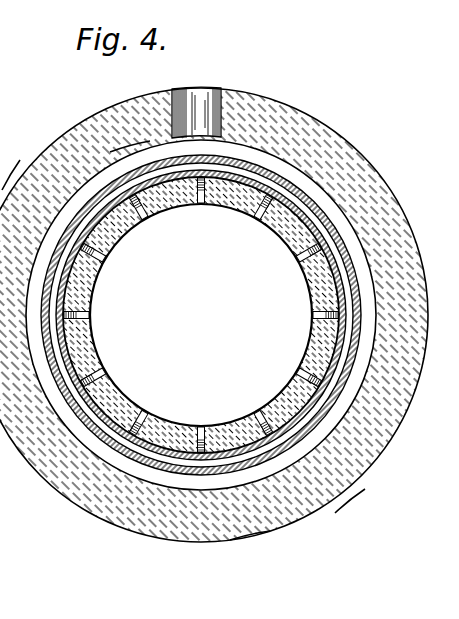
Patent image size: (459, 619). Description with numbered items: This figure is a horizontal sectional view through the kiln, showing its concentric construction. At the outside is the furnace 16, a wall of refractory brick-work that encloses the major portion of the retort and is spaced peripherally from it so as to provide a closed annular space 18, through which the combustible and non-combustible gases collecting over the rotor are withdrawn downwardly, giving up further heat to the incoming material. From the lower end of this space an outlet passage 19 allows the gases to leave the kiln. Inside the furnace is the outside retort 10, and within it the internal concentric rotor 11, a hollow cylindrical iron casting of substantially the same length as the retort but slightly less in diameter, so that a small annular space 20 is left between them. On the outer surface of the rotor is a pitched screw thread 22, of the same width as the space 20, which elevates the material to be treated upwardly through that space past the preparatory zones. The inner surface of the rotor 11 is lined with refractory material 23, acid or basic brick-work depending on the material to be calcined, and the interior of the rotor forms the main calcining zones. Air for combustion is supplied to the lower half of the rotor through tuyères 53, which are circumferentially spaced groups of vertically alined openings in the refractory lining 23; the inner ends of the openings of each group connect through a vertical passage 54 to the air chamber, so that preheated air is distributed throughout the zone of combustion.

The outside retort 10 is at (214, 296).
The internal concentric rotor 11 is at (233, 170).
The furnace 16 is at (265, 503).
The annular space 18 is at (297, 448).
The outlet passage 19 is at (200, 93).
The annular space 20 is at (75, 243).
The screw thread 22 is at (90, 208).
The refractory lining 23 is at (115, 235).
The tuyères 53 is at (202, 452).
The vertical passage 54 is at (202, 454).